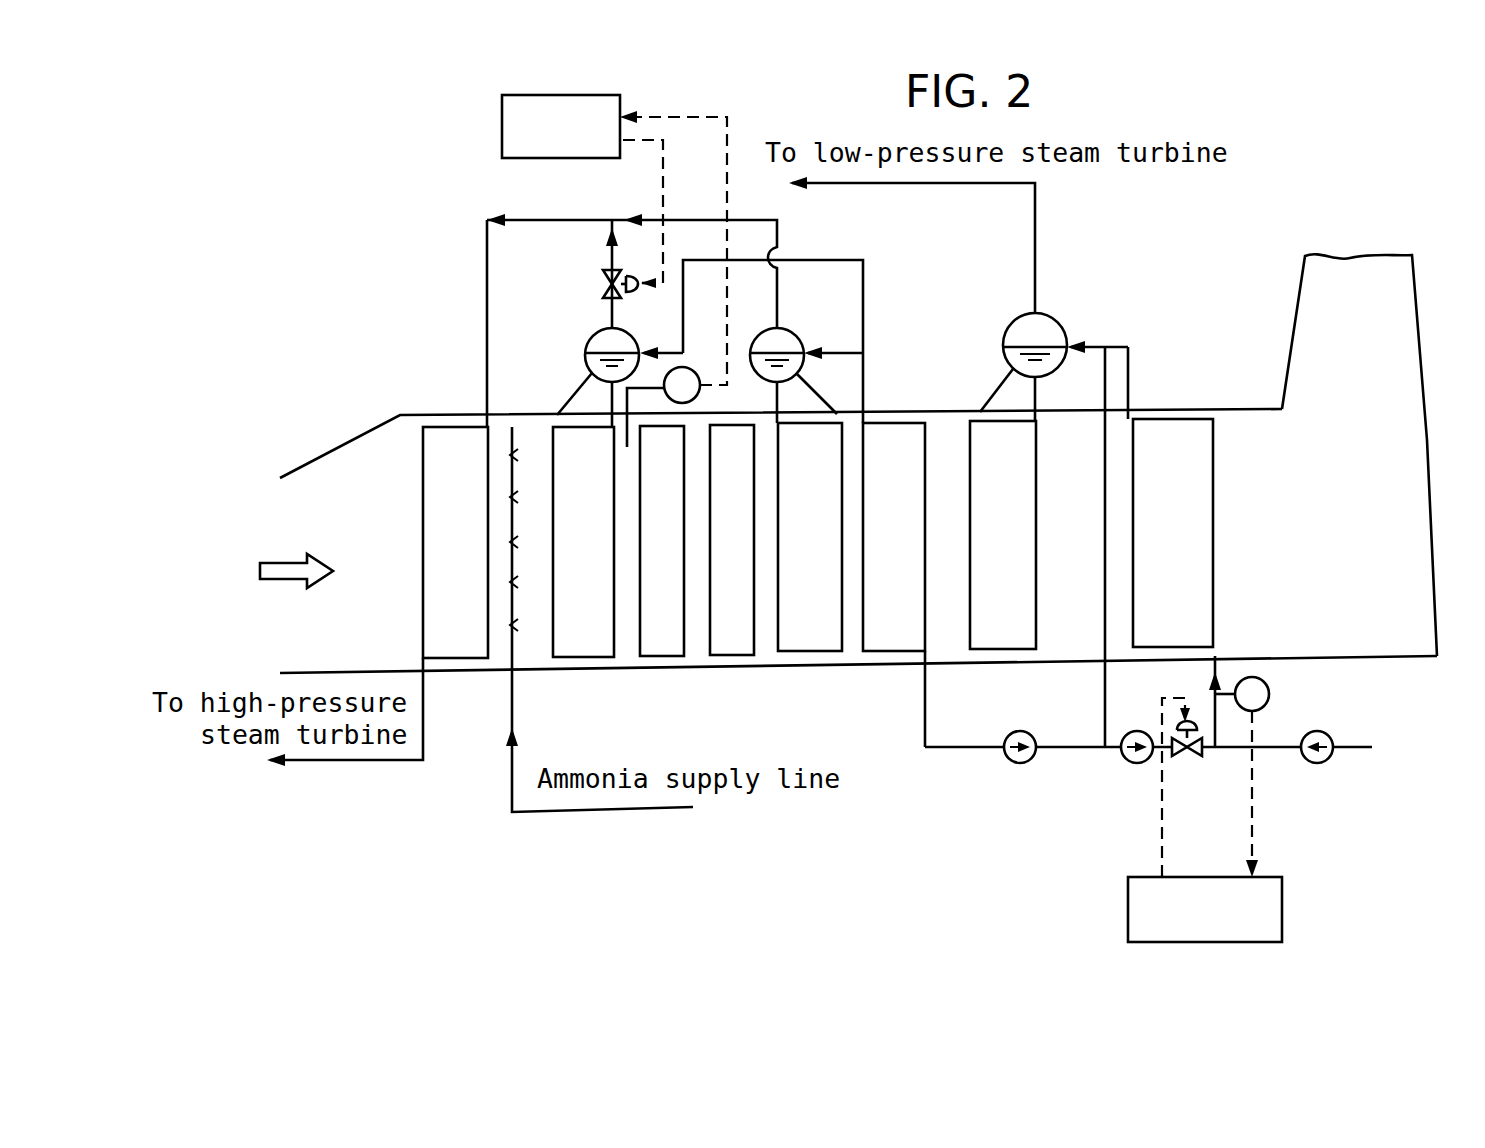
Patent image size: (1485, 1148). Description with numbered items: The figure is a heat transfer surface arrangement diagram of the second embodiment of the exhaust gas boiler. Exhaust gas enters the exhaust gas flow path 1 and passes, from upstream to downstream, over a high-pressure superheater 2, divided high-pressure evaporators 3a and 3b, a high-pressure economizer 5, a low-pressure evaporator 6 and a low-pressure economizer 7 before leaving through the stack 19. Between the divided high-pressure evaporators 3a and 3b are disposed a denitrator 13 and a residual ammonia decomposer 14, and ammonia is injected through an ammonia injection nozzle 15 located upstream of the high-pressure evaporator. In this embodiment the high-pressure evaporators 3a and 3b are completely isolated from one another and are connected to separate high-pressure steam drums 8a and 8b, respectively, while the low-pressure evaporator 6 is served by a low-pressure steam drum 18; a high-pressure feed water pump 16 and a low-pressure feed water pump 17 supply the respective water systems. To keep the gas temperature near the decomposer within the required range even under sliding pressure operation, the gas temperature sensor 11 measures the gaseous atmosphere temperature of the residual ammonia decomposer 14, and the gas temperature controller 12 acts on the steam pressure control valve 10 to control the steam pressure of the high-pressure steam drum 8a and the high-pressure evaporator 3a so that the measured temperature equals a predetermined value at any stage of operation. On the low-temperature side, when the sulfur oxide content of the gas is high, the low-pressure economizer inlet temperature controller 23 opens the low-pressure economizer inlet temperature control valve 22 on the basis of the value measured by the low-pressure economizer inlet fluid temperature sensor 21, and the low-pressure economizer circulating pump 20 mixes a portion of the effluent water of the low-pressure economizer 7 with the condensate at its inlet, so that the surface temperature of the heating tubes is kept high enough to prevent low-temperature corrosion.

The exhaust gas flow path 1 is at (352, 456).
The high-pressure superheater 2 is at (423, 507).
The divided high-pressure evaporator 3a is at (584, 657).
The divided high-pressure evaporator 3b is at (810, 651).
The high-pressure economizer 5 is at (893, 651).
The low-pressure evaporator 6 is at (1003, 649).
The low-pressure economizer 7 is at (1216, 496).
The high-pressure steam drum 8a is at (586, 349).
The high-pressure steam drum 8b is at (795, 333).
The steam pressure control valve 10 is at (606, 290).
The gas temperature sensor 11 is at (688, 368).
The gas temperature controller 12 is at (502, 128).
The denitrator 13 is at (672, 656).
The residual ammonia decomposer 14 is at (740, 655).
The ammonia injection nozzle 15 is at (512, 468).
The high-pressure feed water pump 16 is at (1020, 763).
The low-pressure feed water pump 17 is at (1317, 763).
The low-pressure steam drum 18 is at (1054, 320).
The stack 19 is at (1296, 297).
The low-pressure economizer circulating pump 20 is at (1137, 763).
The low-pressure economizer inlet fluid temperature sensor 21 is at (1270, 692).
The low-pressure economizer inlet temperature control valve 22 is at (1195, 757).
The low-pressure economizer inlet temperature controller 23 is at (1282, 910).